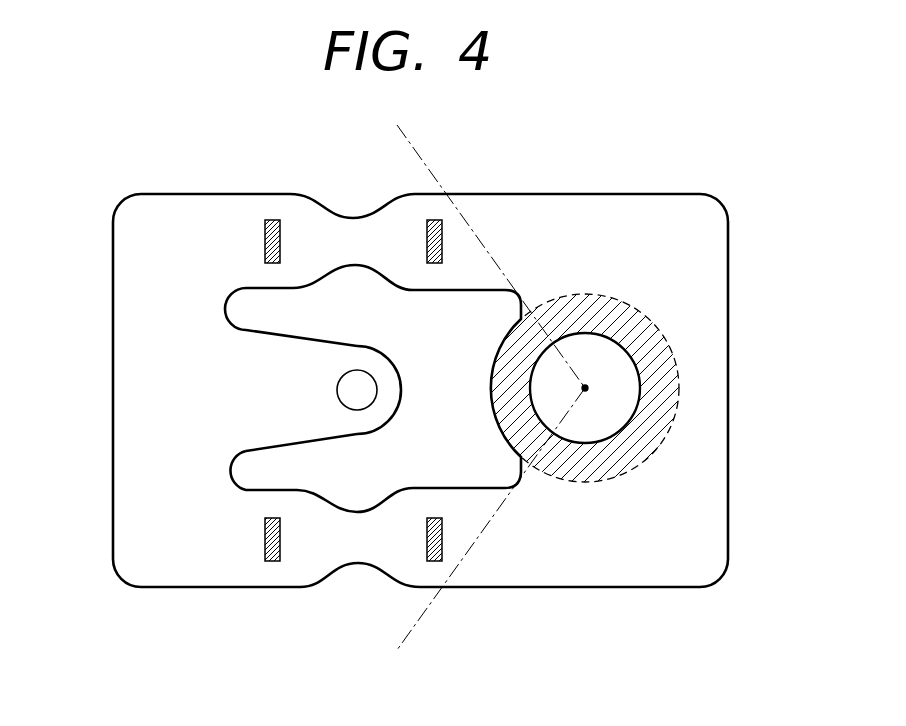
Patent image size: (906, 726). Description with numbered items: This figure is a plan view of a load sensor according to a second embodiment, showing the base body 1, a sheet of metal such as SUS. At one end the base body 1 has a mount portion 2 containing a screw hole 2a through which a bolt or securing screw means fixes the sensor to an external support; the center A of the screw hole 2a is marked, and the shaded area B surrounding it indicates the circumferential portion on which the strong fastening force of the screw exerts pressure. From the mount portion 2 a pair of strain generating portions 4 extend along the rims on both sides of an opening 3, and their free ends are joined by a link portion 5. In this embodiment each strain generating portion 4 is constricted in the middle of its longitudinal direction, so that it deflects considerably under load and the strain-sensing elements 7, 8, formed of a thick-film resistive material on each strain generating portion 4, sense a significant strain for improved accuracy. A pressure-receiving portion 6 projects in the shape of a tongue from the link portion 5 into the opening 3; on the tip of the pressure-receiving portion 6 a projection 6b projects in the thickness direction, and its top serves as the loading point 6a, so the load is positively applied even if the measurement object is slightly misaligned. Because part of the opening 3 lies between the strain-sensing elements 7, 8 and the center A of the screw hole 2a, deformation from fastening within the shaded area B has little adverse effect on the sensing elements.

The base body 1 is at (728, 212).
The mount portion 2 is at (707, 355).
The screw hole 2a is at (598, 352).
The opening 3 is at (322, 494).
The strain generating portion 4 is at (357, 222).
The link portion 5 is at (127, 327).
The pressure-receiving portion 6 is at (317, 347).
The loading point 6a is at (362, 396).
The projection 6b is at (370, 373).
The strain-sensing element 7 is at (427, 236).
The strain-sensing element 8 is at (271, 220).
The center of the screw hole A is at (585, 388).
The shaded area B is at (637, 448).